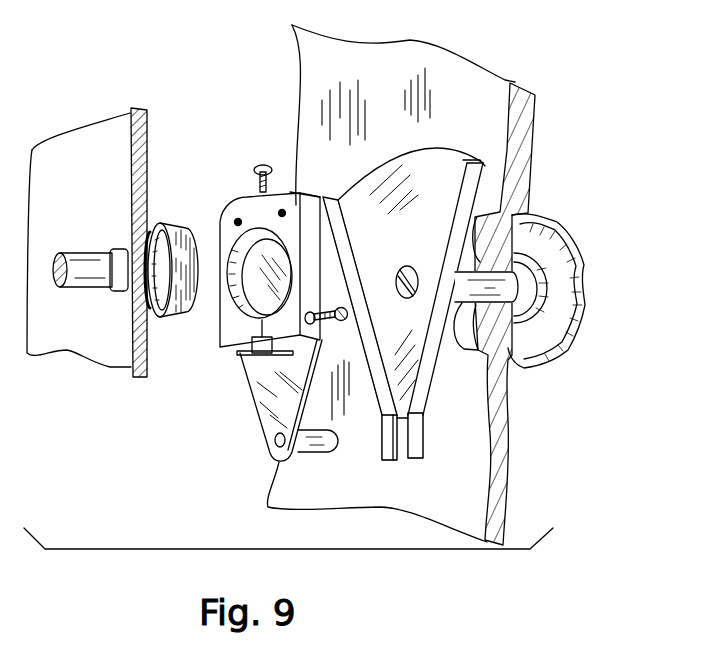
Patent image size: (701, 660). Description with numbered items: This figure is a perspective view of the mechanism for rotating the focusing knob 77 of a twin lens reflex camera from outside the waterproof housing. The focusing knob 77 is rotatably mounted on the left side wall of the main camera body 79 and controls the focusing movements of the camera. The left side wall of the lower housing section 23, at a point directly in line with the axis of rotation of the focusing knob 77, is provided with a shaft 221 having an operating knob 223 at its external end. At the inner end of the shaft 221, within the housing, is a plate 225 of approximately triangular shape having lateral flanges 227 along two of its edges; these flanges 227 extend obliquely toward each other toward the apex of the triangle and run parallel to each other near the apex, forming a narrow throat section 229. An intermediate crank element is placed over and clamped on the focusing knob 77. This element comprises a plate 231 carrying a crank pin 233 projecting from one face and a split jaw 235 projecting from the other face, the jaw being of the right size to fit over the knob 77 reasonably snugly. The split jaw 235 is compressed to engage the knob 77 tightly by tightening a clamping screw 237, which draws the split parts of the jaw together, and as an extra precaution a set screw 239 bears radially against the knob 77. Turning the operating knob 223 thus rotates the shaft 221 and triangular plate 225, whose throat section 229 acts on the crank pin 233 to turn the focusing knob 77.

The main camera body 79 is at (78, 148).
The focusing knob 77 is at (168, 222).
The set screw 239 is at (257, 170).
The split jaw 235 is at (237, 326).
The plate 231 is at (265, 418).
The crank pin 233 is at (329, 449).
The clamping screw 237 is at (333, 322).
The plate 225 is at (394, 160).
The lateral flanges 227 is at (460, 236).
The narrow throat section 229 is at (399, 455).
The lower housing section 23 is at (497, 432).
The shaft 221 is at (508, 287).
The operating knob 223 is at (540, 340).